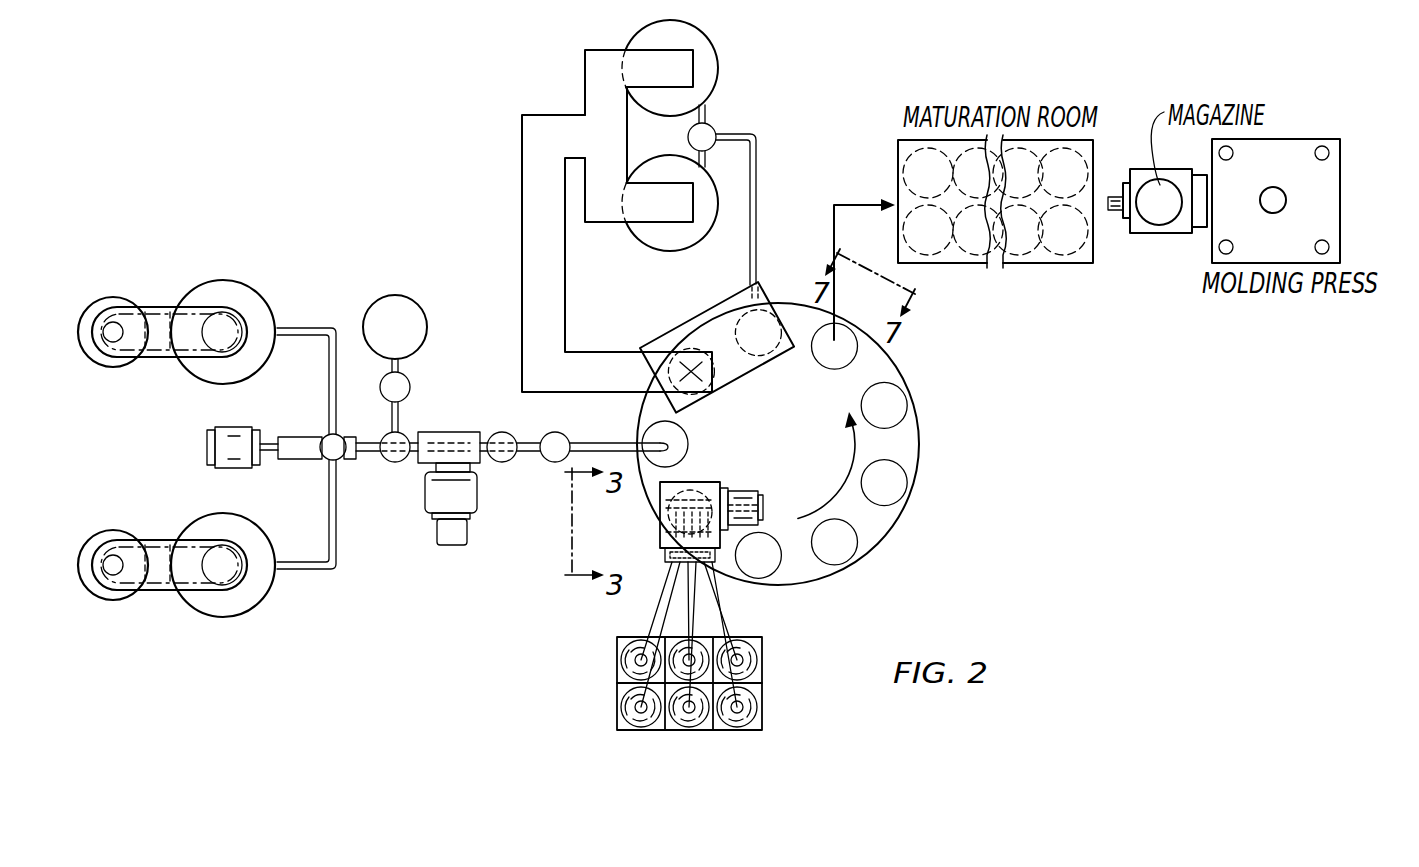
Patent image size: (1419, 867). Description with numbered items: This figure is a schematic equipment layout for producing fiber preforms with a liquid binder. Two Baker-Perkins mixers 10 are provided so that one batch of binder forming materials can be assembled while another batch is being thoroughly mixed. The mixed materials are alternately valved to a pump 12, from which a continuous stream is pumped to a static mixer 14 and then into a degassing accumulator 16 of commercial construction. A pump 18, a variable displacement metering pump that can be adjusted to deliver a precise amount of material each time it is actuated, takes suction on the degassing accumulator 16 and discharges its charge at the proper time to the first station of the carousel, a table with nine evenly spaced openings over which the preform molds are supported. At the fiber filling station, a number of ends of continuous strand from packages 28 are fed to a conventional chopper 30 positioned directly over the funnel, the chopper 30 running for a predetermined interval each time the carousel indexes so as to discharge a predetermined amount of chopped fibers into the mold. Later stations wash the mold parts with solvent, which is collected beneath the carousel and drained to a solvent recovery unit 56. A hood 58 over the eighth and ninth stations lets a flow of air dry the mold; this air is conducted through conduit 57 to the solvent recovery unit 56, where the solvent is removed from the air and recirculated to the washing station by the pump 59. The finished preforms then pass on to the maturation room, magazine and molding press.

The Baker-Perkins mixers 10 is at (230, 256).
The pump 12 is at (329, 436).
The static mixer 14 is at (395, 461).
The degassing accumulator 16 is at (434, 526).
The pump 18 is at (408, 383).
The packages 28 is at (626, 664).
The chopper 30 is at (732, 476).
The solvent recovery unit 56 is at (610, 36).
The conduit 57 is at (523, 210).
The hood 58 is at (700, 321).
The pump 59 is at (716, 128).